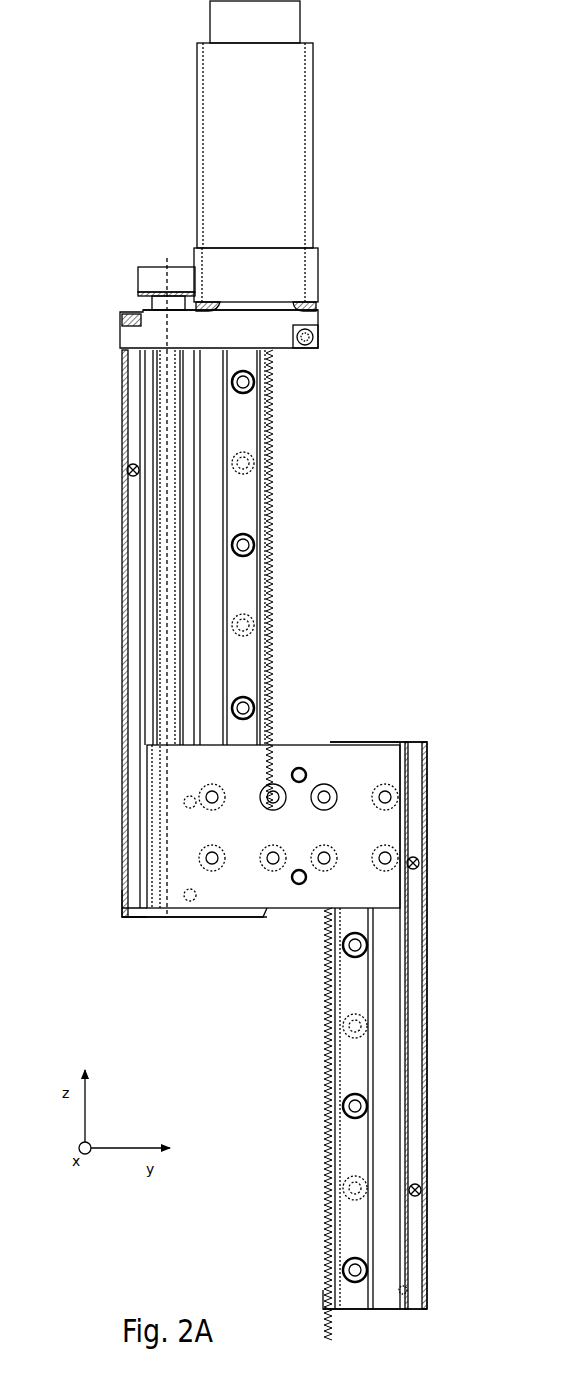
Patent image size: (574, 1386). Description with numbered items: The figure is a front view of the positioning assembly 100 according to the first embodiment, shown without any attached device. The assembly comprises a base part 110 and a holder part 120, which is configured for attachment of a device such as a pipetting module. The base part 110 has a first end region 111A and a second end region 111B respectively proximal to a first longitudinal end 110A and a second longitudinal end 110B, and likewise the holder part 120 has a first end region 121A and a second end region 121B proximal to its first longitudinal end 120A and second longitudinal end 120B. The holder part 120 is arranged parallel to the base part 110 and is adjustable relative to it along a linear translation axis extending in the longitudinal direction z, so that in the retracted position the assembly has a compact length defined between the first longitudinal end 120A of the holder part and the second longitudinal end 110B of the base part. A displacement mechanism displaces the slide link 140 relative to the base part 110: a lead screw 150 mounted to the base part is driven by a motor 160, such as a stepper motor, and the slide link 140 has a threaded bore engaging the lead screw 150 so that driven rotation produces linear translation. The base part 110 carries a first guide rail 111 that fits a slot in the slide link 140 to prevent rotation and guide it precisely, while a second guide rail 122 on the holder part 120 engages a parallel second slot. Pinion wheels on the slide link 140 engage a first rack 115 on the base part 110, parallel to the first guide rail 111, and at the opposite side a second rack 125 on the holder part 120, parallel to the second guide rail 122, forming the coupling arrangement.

The positioning assembly 100 is at (355, 683).
The base part 110 is at (253, 315).
The first longitudinal end of the base part 110A is at (272, 300).
The second longitudinal end of the base part 110B is at (160, 918).
The first guide rail 111 is at (243, 403).
The first end region of the base part 111A is at (326, 340).
The second end region of the base part 111B is at (119, 900).
The first rack 115 is at (272, 515).
The holder part 120 is at (386, 989).
The first longitudinal end of the holder part 120A is at (359, 738).
The second longitudinal end of the holder part 120B is at (389, 1314).
The first end region of the holder part 121A is at (434, 750).
The second end region of the holder part 121B is at (436, 1294).
The second guide rail 122 is at (350, 1145).
The second rack 125 is at (327, 1080).
The slide link 140 is at (193, 828).
The lead screw 150 is at (165, 365).
The motor 160 is at (225, 92).